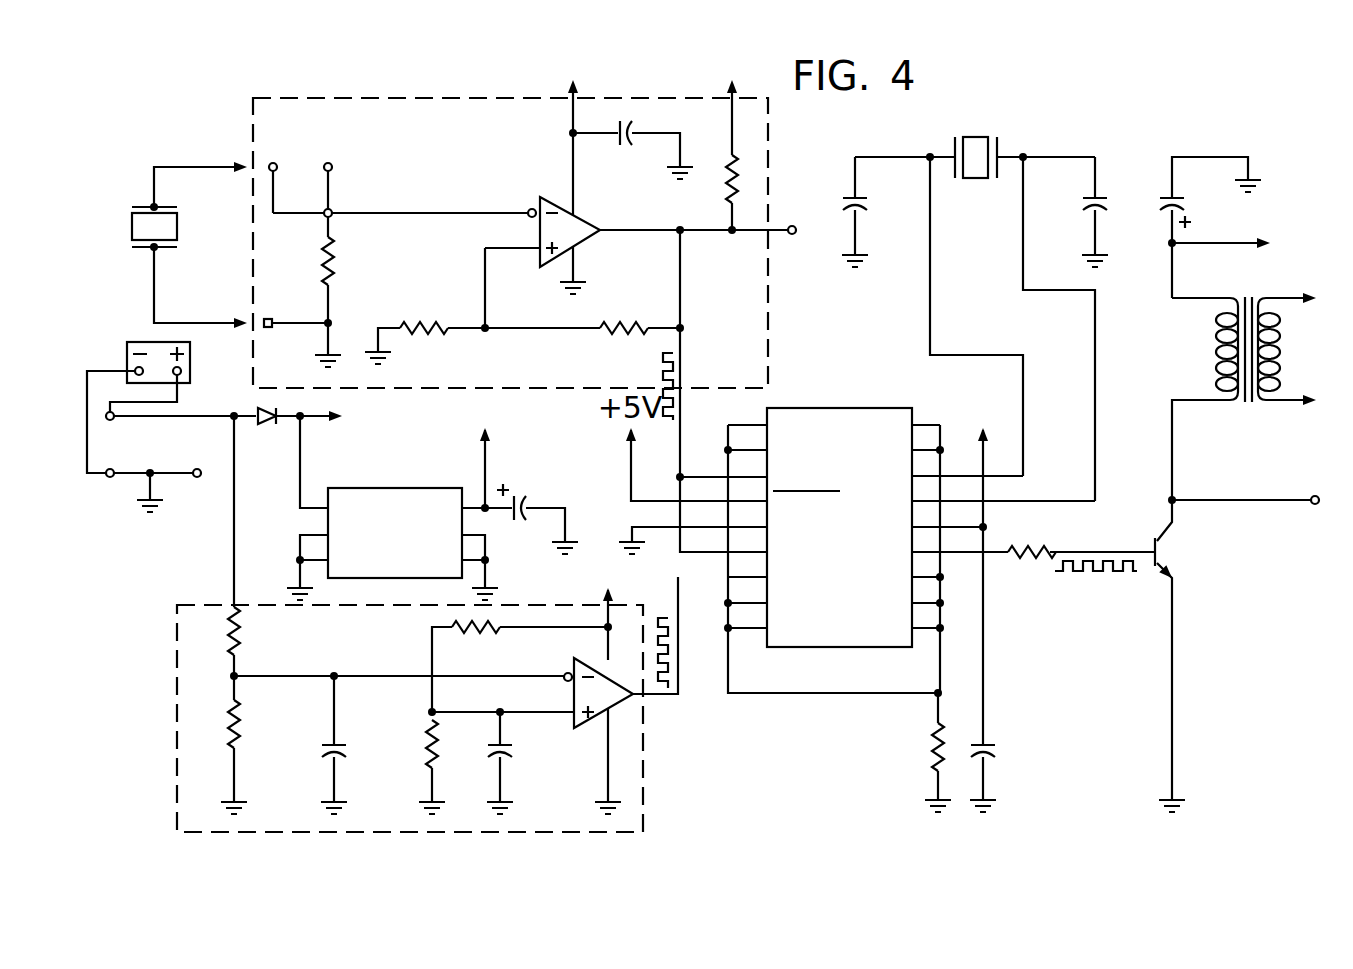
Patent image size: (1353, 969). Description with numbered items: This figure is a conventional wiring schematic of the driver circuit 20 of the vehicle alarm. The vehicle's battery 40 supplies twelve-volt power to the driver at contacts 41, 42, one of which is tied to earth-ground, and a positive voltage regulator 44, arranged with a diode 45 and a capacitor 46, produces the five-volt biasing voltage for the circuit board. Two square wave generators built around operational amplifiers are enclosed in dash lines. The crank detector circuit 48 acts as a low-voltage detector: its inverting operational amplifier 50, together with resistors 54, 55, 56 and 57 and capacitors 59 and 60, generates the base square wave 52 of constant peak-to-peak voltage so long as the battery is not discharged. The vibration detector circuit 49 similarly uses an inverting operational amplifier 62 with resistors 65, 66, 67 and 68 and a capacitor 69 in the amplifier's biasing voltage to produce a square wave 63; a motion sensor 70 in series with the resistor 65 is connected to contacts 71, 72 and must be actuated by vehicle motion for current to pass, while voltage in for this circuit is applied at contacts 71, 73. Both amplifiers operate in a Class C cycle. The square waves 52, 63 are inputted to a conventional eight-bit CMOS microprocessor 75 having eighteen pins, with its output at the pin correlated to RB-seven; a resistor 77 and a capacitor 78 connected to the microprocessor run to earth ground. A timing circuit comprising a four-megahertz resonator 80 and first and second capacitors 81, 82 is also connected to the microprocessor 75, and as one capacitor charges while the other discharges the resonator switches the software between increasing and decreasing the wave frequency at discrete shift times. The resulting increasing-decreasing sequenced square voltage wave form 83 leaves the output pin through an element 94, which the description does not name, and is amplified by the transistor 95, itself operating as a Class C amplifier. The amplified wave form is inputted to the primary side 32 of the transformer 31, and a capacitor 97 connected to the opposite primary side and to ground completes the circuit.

The driver circuit 20 is at (1064, 780).
The transformer 31 is at (1258, 376).
The primary side 32 is at (1202, 400).
The battery 40 is at (150, 342).
The contact 41 is at (114, 420).
The contact 42 is at (112, 478).
The positive voltage regulator 44 is at (365, 488).
The diode 45 is at (268, 426).
The capacitor 46 is at (518, 494).
The crank detector circuit 48 is at (525, 836).
The vibration detector circuit 49 is at (250, 133).
The inverting operational amplifier 50 is at (590, 722).
The base square wave 52 is at (672, 665).
The resistor 54 is at (240, 627).
The resistor 55 is at (238, 718).
The resistor 56 is at (500, 633).
The resistor 57 is at (440, 748).
The capacitor 59 is at (348, 752).
The capacitor 60 is at (513, 752).
The inverting operational amplifier 62 is at (552, 199).
The square wave 63 is at (663, 376).
The resistor 65 is at (333, 262).
The resistor 66 is at (420, 322).
The resistor 67 is at (620, 322).
The resistor 68 is at (727, 181).
The capacitor 69 is at (626, 128).
The motion sensor 70 is at (132, 224).
The contact 71 is at (277, 163).
The contact 72 is at (270, 317).
The contact 73 is at (332, 163).
The microprocessor 75 is at (822, 408).
The resistor 77 is at (935, 748).
The capacitor 78 is at (990, 748).
The resonator 80 is at (975, 137).
The first capacitor 81 is at (1108, 204).
The second capacitor 82 is at (848, 204).
The square voltage wave form 83 is at (1104, 572).
The base resistor 94 is at (1040, 540).
The transistor 95 is at (1170, 547).
The capacitor 97 is at (1188, 207).